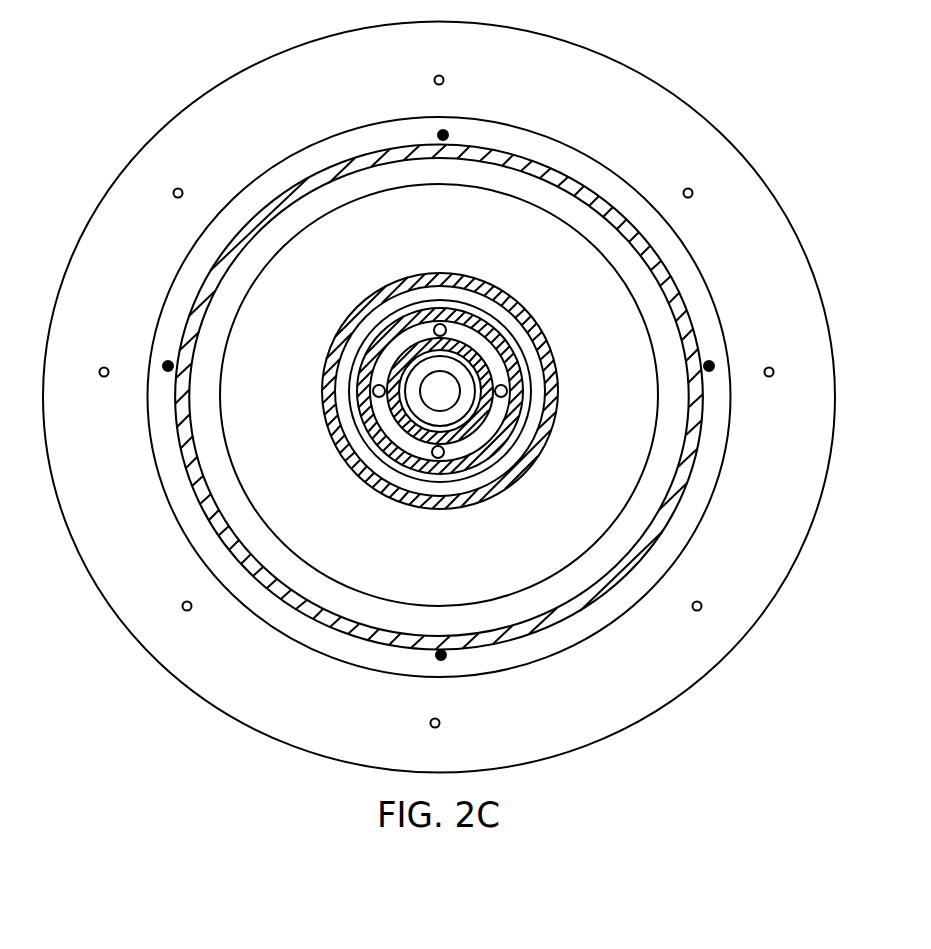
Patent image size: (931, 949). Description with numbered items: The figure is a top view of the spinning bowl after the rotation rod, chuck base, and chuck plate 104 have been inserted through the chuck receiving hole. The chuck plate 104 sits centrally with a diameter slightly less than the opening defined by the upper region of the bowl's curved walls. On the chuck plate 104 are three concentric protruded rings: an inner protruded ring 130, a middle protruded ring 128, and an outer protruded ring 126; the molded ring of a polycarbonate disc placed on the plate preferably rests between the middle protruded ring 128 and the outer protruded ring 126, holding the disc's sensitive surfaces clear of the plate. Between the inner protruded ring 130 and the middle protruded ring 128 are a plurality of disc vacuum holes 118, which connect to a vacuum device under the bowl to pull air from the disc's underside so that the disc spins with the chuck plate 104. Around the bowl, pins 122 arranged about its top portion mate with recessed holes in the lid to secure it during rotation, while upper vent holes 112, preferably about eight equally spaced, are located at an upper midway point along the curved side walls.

The chuck plate 104 is at (345, 285).
The upper vent holes 112 is at (444, 80).
The disc vacuum holes 118 is at (439, 324).
The pins 122 is at (448, 135).
The outer protruded ring 126 is at (549, 417).
The middle protruded ring 128 is at (513, 428).
The inner protruded ring 130 is at (484, 424).